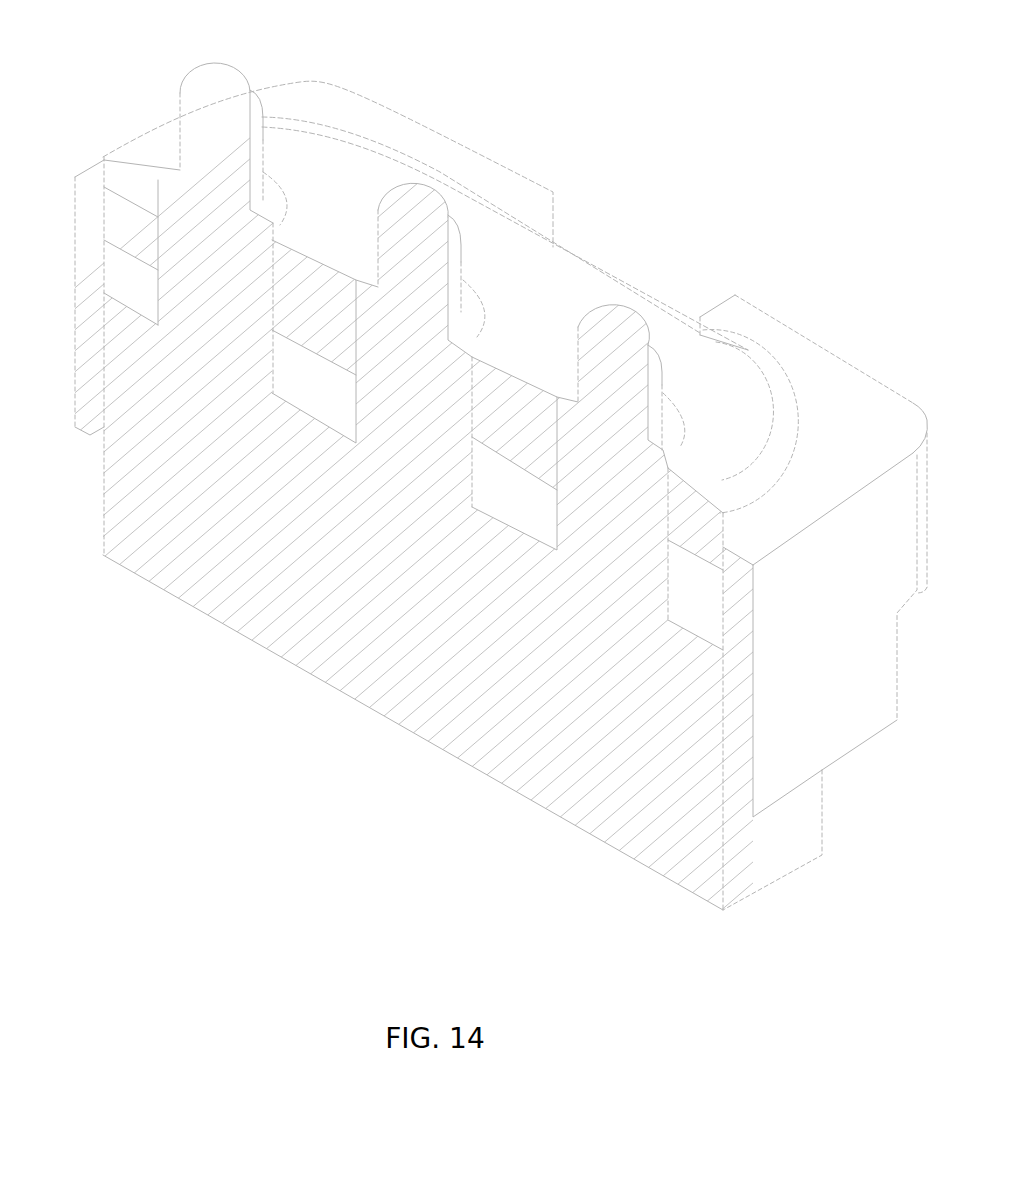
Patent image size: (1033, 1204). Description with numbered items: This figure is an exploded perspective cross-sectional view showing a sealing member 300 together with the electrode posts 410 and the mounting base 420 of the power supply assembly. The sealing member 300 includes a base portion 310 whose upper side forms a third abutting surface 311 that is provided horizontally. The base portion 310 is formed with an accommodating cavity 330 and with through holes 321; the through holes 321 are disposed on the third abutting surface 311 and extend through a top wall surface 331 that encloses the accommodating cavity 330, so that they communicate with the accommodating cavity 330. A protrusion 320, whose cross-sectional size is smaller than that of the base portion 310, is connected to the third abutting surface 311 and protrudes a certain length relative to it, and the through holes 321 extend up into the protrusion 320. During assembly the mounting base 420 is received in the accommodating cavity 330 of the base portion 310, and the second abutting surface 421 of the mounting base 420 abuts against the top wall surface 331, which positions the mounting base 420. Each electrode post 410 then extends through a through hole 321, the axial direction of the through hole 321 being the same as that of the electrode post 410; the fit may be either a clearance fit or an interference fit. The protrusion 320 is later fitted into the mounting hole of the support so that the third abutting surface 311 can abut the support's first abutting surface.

The sealing member 300 is at (411, 80).
The base portion 310 is at (870, 703).
The third abutting surface 311 is at (828, 383).
The protrusion 320 is at (563, 287).
The through hole 321 is at (163, 207).
The accommodating cavity 330 is at (117, 282).
The top wall surface 331 is at (707, 583).
The electrode post 410 is at (208, 105).
The mounting base 420 is at (178, 558).
The second abutting surface 421 is at (710, 632).